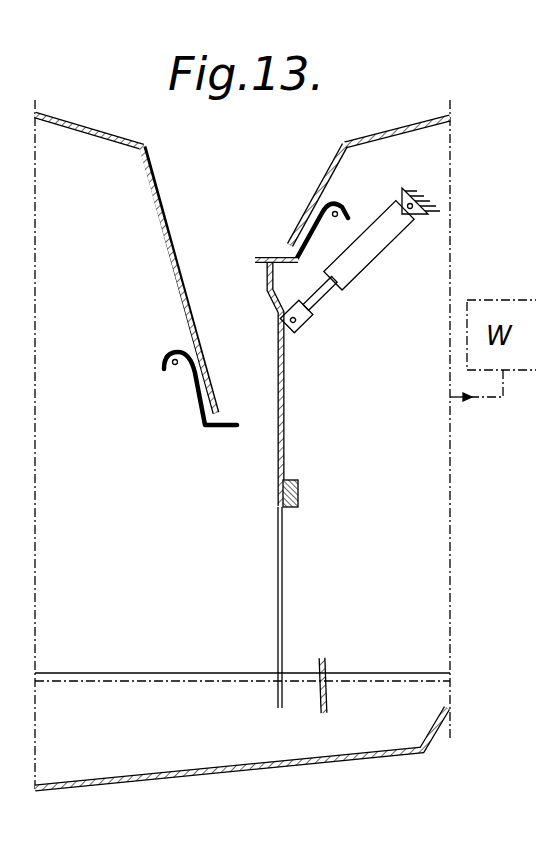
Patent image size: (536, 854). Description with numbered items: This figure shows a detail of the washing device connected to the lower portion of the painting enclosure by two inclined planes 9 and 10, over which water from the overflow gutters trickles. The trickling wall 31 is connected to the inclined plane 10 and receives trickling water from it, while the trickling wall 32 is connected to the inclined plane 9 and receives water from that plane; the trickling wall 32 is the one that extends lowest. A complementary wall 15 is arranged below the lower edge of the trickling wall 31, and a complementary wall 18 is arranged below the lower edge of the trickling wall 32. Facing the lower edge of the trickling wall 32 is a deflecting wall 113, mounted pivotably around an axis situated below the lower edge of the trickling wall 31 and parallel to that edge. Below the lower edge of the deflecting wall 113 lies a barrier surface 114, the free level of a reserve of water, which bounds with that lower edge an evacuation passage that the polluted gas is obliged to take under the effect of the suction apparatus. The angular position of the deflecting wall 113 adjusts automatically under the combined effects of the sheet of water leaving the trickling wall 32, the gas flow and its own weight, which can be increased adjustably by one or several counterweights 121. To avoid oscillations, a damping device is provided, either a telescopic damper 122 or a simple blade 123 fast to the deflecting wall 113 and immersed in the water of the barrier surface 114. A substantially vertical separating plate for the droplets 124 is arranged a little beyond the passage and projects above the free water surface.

The inclined plane 9 is at (101, 133).
The inclined plane 10 is at (400, 131).
The complementary wall 15 is at (300, 223).
The complementary wall 18 is at (192, 398).
The trickling wall 31 is at (340, 168).
The trickling wall 32 is at (152, 188).
The deflecting wall 113 is at (285, 383).
The barrier surface 114 is at (382, 672).
The counterweight 121 is at (299, 489).
The telescopic damper 122 is at (368, 247).
The blade 123 is at (276, 618).
The separating plate for the droplets 124 is at (322, 658).